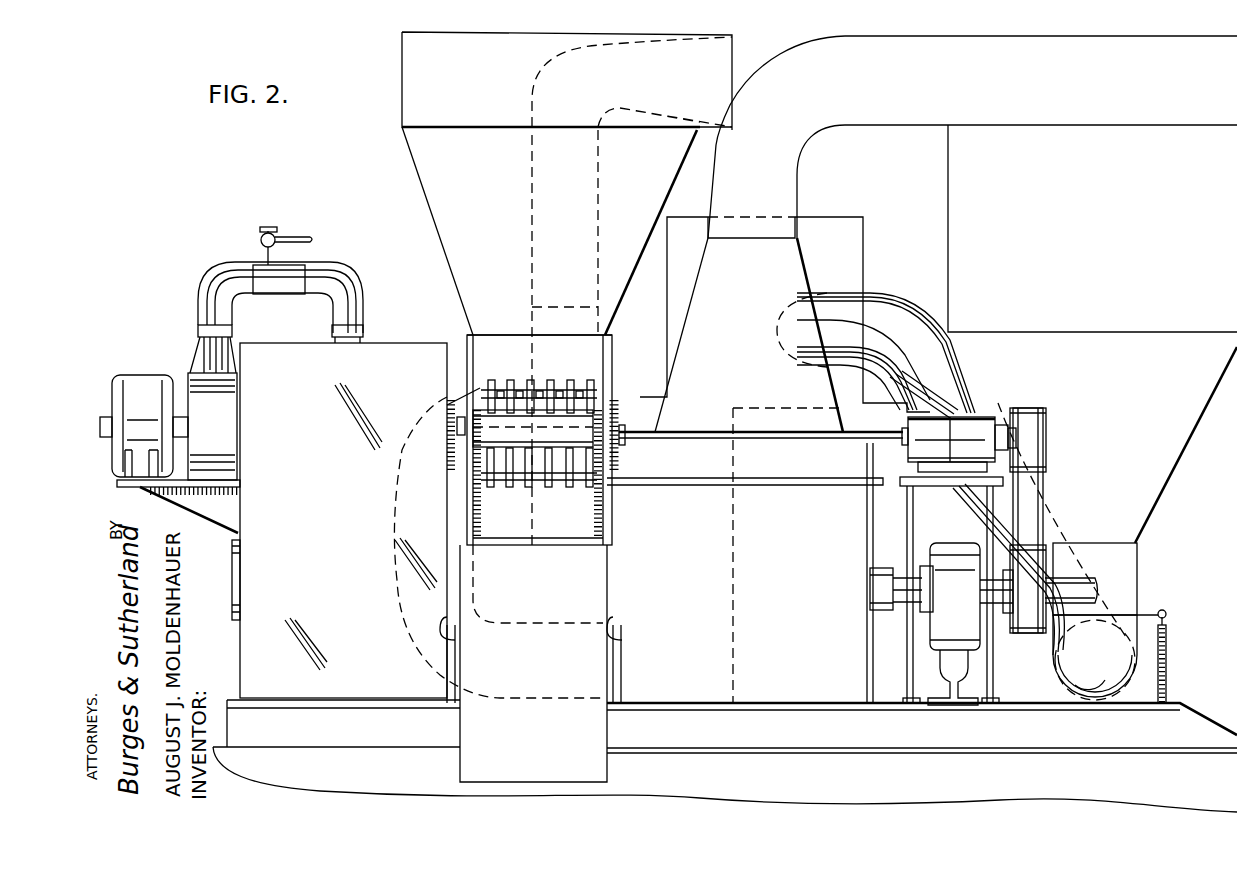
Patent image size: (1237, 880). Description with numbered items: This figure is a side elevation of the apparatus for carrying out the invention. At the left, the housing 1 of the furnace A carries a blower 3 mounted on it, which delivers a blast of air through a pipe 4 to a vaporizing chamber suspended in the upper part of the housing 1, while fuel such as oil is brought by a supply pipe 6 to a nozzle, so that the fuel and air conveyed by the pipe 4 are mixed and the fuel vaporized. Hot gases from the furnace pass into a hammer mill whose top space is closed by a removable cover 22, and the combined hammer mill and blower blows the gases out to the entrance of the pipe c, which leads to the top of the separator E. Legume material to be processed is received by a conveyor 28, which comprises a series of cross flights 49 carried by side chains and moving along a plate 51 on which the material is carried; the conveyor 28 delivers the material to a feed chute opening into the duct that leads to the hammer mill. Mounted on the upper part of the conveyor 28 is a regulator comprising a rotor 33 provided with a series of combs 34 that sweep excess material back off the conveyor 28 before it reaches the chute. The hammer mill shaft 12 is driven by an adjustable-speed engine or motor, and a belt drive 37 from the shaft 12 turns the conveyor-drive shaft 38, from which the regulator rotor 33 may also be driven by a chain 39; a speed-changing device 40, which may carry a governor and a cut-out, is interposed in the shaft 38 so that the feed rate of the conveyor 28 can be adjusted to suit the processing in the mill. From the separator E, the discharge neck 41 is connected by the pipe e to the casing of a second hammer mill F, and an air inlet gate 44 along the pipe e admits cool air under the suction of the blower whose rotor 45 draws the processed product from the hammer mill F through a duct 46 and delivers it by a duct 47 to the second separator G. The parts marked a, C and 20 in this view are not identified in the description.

The housing 1 is at (402, 343).
The blower 3 is at (203, 400).
The pipe 4 is at (216, 272).
The supply pipe 6 is at (294, 237).
The pipe section a is at (362, 286).
The furnace A is at (222, 521).
The second separator G is at (410, 189).
The duct 47 is at (530, 218).
The rotor 45 is at (557, 305).
The duct 46 is at (397, 520).
The combs 34 is at (530, 380).
The rotor 33 is at (553, 420).
The chain 39 is at (618, 402).
The conveyor 28 is at (481, 526).
The cross flights 49 is at (553, 490).
The plate 51 is at (553, 532).
The discharge chute C is at (622, 766).
The pipe c is at (838, 126).
The hopper wall 20 is at (800, 263).
The separator E is at (945, 172).
The second hammer mill F is at (879, 244).
The pipe e is at (912, 303).
The conveyor-drive shaft 38 is at (808, 433).
The removable cover 22 is at (780, 470).
The speed-changing device 40 is at (977, 415).
The belt drive 37 is at (1040, 495).
The shaft 12 is at (1075, 586).
The discharge neck 41 is at (1137, 588).
The air inlet gate 44 is at (1168, 647).